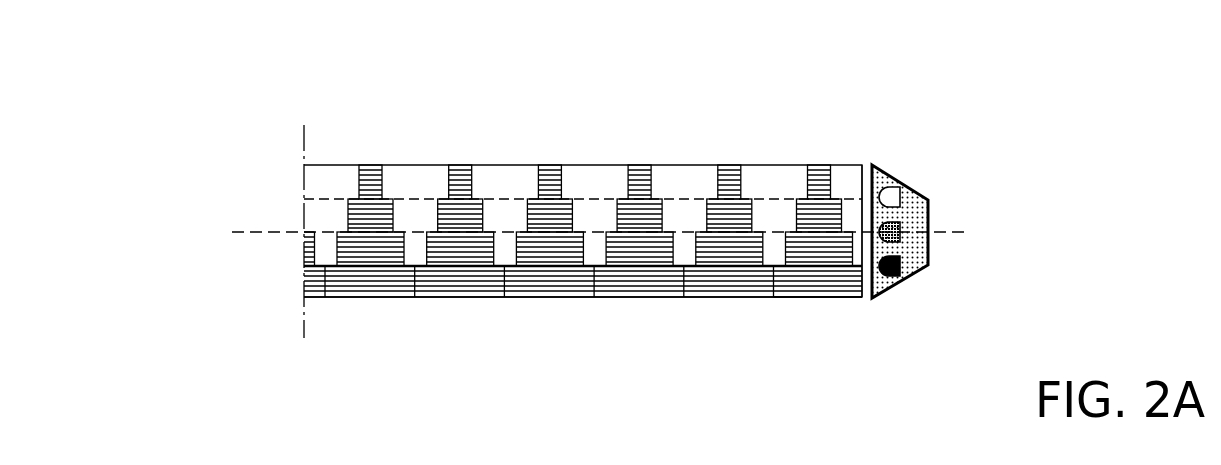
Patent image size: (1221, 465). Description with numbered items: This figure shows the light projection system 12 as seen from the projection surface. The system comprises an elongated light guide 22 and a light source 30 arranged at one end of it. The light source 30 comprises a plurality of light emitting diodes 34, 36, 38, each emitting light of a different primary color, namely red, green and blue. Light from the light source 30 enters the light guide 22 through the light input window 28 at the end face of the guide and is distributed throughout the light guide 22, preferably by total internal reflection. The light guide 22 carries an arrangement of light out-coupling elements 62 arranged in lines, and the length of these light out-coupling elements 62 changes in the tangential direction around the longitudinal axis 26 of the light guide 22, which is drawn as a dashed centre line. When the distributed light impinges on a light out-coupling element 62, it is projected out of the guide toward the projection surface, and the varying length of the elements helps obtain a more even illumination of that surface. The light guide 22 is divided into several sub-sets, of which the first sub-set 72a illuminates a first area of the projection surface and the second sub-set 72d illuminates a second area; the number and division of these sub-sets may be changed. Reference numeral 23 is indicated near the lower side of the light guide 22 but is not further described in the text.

The light projection system 12 is at (779, 77).
The light guide 22 is at (592, 173).
The bottom surface 23 is at (863, 320).
The longitudinal axis 26 is at (259, 233).
The light input window 28 is at (852, 176).
The light source 30 is at (924, 204).
The light emitting diode 34 is at (894, 181).
The light emitting diode 36 is at (903, 239).
The light emitting diode 38 is at (899, 279).
The light out-coupling elements 62 is at (637, 290).
The first sub-set 72a is at (286, 281).
The second sub-set 72d is at (286, 178).